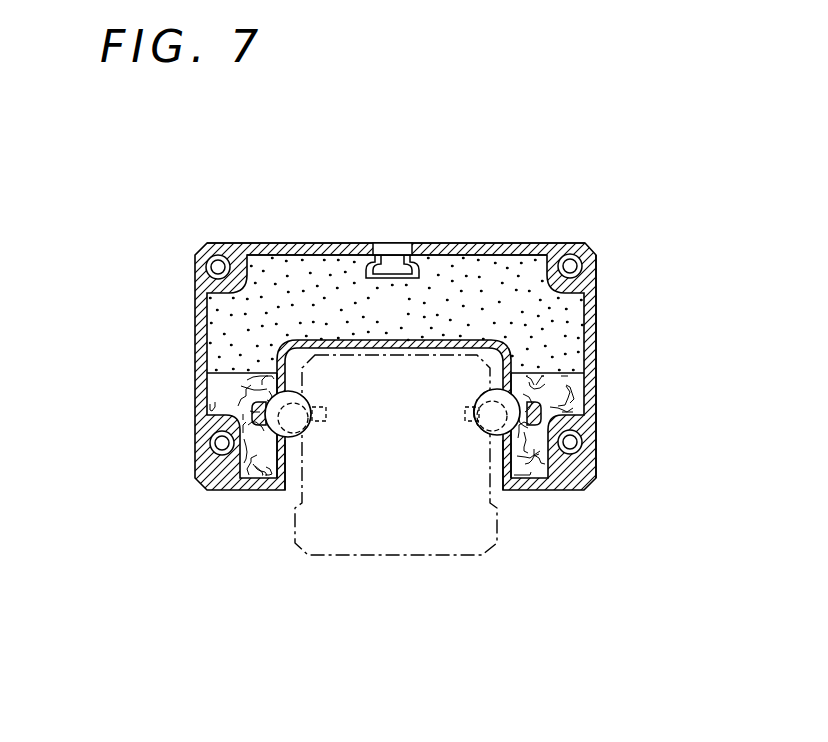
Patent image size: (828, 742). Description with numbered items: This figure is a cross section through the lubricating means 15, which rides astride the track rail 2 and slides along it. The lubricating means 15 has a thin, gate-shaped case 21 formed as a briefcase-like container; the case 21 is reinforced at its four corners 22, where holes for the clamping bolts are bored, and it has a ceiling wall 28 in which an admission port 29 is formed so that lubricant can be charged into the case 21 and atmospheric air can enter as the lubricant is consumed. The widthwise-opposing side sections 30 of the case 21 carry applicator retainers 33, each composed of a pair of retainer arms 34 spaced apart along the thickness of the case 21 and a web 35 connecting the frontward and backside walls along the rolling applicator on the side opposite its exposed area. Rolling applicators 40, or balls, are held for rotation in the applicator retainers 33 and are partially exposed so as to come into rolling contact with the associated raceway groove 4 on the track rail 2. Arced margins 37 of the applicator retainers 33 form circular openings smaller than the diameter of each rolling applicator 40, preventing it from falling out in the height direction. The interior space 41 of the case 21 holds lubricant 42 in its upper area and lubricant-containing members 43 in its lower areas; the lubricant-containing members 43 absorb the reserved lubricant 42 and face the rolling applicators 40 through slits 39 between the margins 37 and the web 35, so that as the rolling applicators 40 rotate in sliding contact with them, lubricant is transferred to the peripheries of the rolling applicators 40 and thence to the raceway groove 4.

The track rail 2 is at (401, 515).
The raceway groove 4 is at (305, 425).
The lubricating means 15 is at (601, 240).
The case 21 is at (590, 356).
The corners 22 is at (200, 283).
The ceiling wall 28 is at (471, 243).
The admission port 29 is at (392, 255).
The side section 30 is at (258, 401).
The applicator retainer 33 is at (283, 445).
The retainer arms 34 is at (302, 436).
The web 35 is at (257, 413).
The arced margins 37 is at (274, 382).
The slits 39 is at (250, 384).
The rolling applicators 40 is at (303, 393).
The interior space 41 is at (402, 319).
The lubricant 42 is at (486, 302).
The lubricant-containing member 43 is at (263, 395).